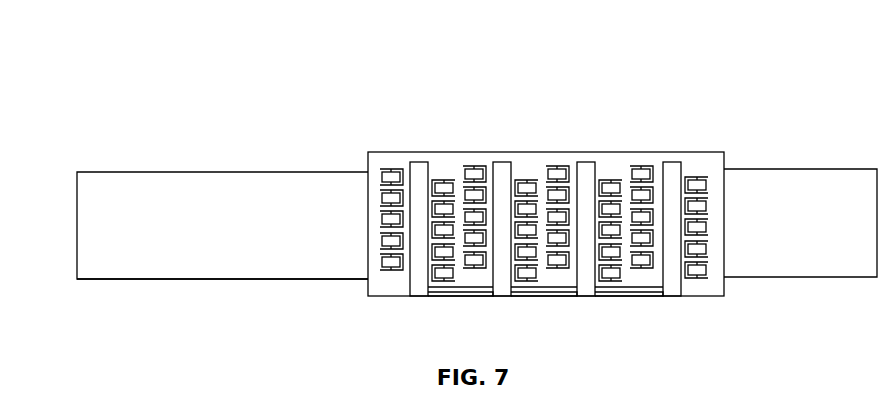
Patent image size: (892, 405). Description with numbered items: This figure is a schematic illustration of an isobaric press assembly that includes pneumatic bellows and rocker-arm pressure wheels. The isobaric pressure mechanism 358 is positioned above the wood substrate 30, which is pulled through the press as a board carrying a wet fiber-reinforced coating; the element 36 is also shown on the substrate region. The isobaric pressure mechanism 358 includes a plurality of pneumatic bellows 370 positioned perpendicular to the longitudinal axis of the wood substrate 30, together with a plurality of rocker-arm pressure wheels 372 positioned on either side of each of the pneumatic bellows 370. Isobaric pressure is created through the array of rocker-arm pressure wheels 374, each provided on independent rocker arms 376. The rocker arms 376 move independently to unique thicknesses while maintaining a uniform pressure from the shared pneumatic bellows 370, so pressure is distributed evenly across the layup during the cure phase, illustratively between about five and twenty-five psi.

The wood substrate 30 is at (202, 264).
The catheter wall 36 is at (304, 264).
The isobaric pressure mechanism 358 is at (702, 58).
The pneumatic bellows 370 is at (420, 167).
The rocker-arm pressure wheels 372 is at (392, 276).
The rocker-arm pressure wheels 374 is at (392, 171).
The rocker arms 376 is at (381, 186).